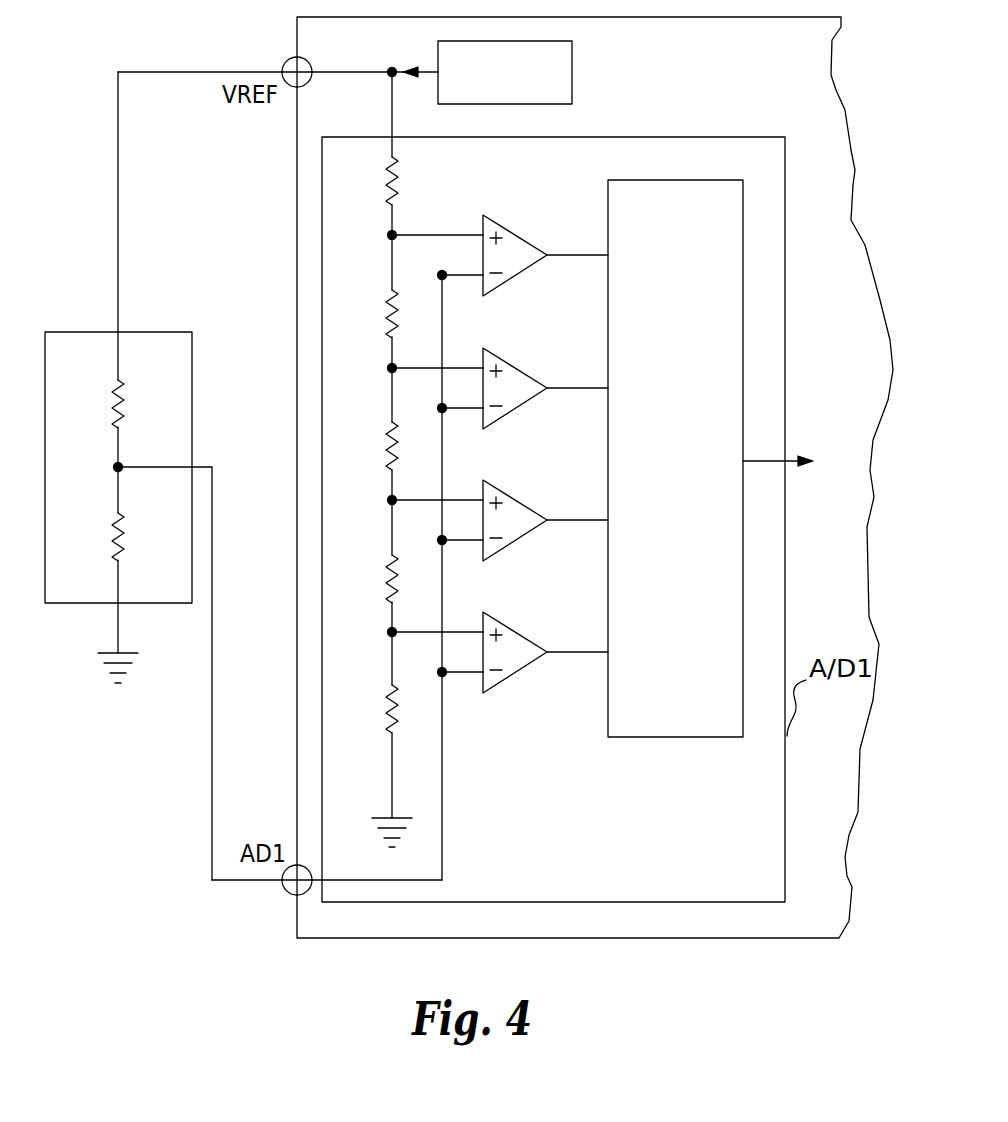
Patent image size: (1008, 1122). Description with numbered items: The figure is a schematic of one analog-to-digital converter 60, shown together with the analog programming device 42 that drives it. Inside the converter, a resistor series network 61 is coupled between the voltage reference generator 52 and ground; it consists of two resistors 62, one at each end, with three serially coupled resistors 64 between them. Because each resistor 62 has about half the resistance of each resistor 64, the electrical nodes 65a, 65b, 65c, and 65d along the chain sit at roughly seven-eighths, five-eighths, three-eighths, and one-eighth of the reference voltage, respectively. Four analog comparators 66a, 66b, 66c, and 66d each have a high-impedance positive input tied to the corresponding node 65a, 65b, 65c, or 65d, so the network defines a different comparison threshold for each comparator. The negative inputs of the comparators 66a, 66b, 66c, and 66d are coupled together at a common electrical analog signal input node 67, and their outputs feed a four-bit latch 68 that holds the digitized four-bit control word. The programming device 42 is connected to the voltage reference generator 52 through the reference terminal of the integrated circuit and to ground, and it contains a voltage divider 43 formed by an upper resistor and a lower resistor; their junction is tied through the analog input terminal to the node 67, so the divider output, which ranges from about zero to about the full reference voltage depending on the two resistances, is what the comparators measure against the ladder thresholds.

The analog programming device 42 is at (196, 368).
The voltage divider 43 is at (118, 455).
The voltage reference generator 52 is at (572, 60).
The analog-to-digital converter 60 is at (690, 137).
The resistor series network 61 is at (348, 254).
The end resistor 62 is at (392, 185).
The serially coupled resistor 64 is at (392, 318).
The electrical node 65a is at (396, 239).
The electrical node 65b is at (391, 369).
The electrical node 65c is at (391, 501).
The electrical node 65d is at (391, 633).
The analog comparator 66a is at (512, 230).
The analog comparator 66b is at (512, 363).
The analog comparator 66c is at (512, 495).
The analog comparator 66d is at (512, 627).
The common electrical analog signal input node 67 is at (442, 782).
The four-bit latch 68 is at (646, 740).